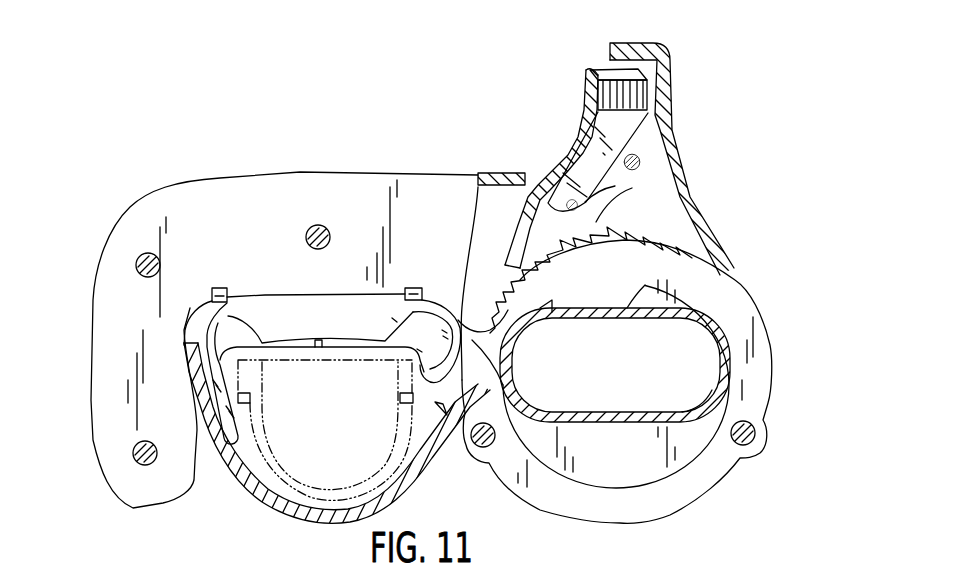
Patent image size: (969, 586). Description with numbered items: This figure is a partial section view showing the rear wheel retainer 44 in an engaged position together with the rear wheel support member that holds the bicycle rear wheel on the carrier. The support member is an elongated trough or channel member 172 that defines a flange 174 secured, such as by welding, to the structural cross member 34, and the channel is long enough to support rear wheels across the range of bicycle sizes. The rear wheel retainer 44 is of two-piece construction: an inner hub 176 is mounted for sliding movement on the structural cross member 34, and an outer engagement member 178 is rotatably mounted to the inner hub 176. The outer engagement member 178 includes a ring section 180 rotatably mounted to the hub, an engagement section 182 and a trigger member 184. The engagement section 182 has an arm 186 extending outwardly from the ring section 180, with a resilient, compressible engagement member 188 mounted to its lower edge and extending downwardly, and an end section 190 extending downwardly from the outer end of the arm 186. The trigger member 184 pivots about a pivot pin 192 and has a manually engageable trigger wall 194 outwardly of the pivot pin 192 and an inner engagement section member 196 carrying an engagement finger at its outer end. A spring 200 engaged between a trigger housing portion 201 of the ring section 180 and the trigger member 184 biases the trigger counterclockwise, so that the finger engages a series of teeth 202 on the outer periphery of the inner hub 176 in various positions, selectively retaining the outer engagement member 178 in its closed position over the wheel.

The engagement section 182 is at (133, 205).
The arm 186 is at (327, 183).
The resilient, compressible engagement member 188 is at (272, 333).
The end section 190 is at (100, 385).
The channel member 172 is at (252, 503).
The flange 174 is at (465, 318).
The trigger member 184 is at (528, 167).
The inner engagement section member 196 is at (514, 235).
The trigger wall 194 is at (585, 93).
The pivot pin 192 is at (536, 195).
The spring 200 is at (672, 137).
The trigger housing portion 201 is at (672, 68).
The outer engagement member 178 is at (698, 93).
The teeth 202 is at (597, 220).
The rear wheel retainer 44 is at (733, 218).
The ring section 180 is at (617, 513).
The inner hub 176 is at (705, 300).
The structural cross member 34 is at (577, 425).